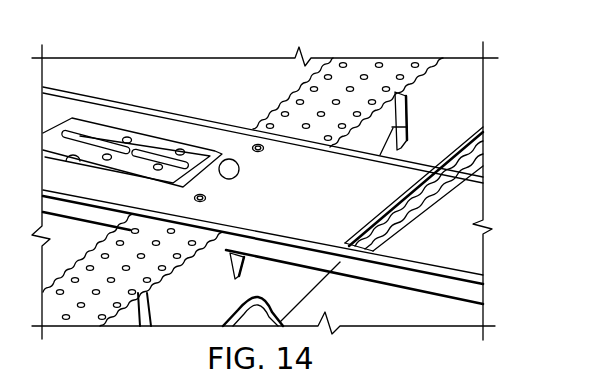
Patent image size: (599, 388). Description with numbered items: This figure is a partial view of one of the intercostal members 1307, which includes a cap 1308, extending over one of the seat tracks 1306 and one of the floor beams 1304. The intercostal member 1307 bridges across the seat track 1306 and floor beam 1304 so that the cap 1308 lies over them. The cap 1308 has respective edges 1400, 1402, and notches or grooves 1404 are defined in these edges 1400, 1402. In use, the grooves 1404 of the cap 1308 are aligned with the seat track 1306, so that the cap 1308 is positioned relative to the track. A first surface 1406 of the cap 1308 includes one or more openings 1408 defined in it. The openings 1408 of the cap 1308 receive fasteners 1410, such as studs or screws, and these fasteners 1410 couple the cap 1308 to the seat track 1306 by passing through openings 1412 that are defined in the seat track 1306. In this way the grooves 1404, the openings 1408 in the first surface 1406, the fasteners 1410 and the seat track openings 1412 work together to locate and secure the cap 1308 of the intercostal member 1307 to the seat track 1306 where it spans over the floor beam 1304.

The floor beam 1304 is at (453, 67).
The seat track 1306 is at (288, 83).
The intercostal member 1307 is at (86, 82).
The cap 1308 is at (437, 251).
The edge of the cap 1400 is at (337, 263).
The edge of the cap 1402 is at (408, 127).
The grooves 1404 is at (277, 123).
The first surface of the cap 1406 is at (460, 205).
The openings of the cap 1408 is at (268, 153).
The fastener 1410 is at (234, 177).
The openings of the seat track 1412 is at (128, 256).